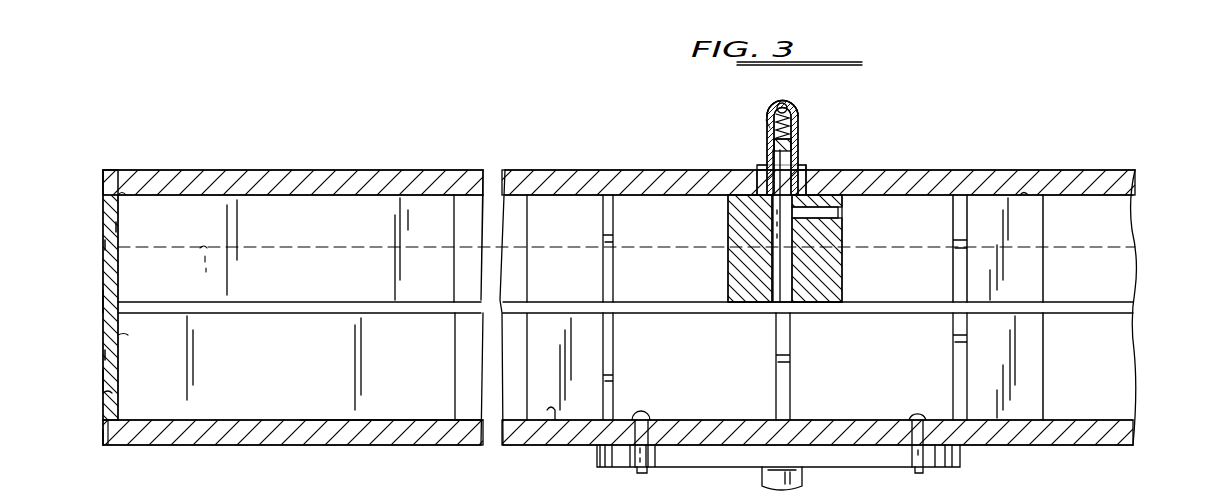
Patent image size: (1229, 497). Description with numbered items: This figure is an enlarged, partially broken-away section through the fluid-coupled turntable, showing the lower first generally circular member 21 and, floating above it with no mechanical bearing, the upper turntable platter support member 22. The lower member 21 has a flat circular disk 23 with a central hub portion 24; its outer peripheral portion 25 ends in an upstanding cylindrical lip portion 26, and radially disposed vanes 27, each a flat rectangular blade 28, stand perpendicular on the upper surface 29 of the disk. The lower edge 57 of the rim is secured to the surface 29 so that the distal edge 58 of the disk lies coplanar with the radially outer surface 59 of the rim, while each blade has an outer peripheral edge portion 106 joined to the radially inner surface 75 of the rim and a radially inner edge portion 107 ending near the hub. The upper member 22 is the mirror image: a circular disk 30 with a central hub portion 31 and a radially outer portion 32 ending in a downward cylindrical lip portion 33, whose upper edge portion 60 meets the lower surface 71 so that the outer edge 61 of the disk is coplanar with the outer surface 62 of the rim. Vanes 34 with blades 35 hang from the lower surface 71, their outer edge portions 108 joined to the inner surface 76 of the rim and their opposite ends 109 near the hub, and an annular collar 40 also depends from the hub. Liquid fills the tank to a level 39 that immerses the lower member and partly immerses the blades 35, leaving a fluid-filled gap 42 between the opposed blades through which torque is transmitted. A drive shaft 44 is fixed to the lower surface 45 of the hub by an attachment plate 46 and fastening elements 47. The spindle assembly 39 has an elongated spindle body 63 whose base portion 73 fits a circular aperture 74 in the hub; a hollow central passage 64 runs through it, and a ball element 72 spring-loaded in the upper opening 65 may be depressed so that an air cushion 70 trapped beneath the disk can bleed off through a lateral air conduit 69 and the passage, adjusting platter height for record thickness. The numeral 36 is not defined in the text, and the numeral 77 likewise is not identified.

The first generally circular member 21 is at (1159, 400).
The turntable platter support member 22 is at (1155, 264).
The generally flat circular disk 23 is at (397, 445).
The central hub portion 24 is at (808, 412).
The outer peripheral portion 25 is at (152, 445).
The cylindrical lip portion 26 is at (106, 382).
The radially disposed vanes 27 is at (1128, 358).
The flat rectangular blade 28 is at (306, 381).
The upper surface of the disk 29 is at (541, 425).
The generally flat circular disk 30 is at (428, 182).
The central hub portion 31 is at (842, 160).
The radially outer portion 32 is at (178, 183).
The cylindrical lip portion 33 is at (108, 264).
The radially disposed vanes 34 is at (1122, 228).
The flat rectangular blade 35 is at (340, 276).
The partition 36 is at (932, 195).
The spindle assembly 39 is at (751, 126).
The annular collar 40 is at (728, 260).
The fluid-filled gap 42 is at (108, 164).
The drive shaft 44 is at (802, 476).
The lower surface 45 is at (1060, 445).
The attachment plate 46 is at (960, 463).
The fastening elements 47 is at (648, 415).
The lower edge of the rim portion 57 is at (108, 445).
The distal edge of the disk 58 is at (103, 442).
The radially outer surface of the rim portion 59 is at (116, 397).
The upper edge portion 60 is at (124, 195).
The radially outer edge of the disk 61 is at (103, 190).
The radially outer surface of the rim portion 62 is at (103, 282).
The elongated spindle body 63 is at (767, 135).
The hollow central passage 64 is at (776, 162).
The upper opening 65 is at (770, 104).
The lateral air conduit 69 is at (930, 195).
The air cushion 70 is at (868, 243).
The lower surface of the disk 71 is at (1030, 195).
The ball element 72 is at (786, 105).
The base portion 73 is at (805, 172).
The circular aperture 74 is at (758, 182).
The radially inner surface of the annular rim portion 75 is at (120, 334).
The radially inner surface of the annular rim portion 76 is at (122, 229).
The spring 77 is at (790, 128).
The outer peripheral edge portion 106 is at (105, 355).
The radially inner edge portion 107 is at (455, 420).
The outer edge portions 108 is at (103, 240).
The opposite end 109 is at (454, 226).